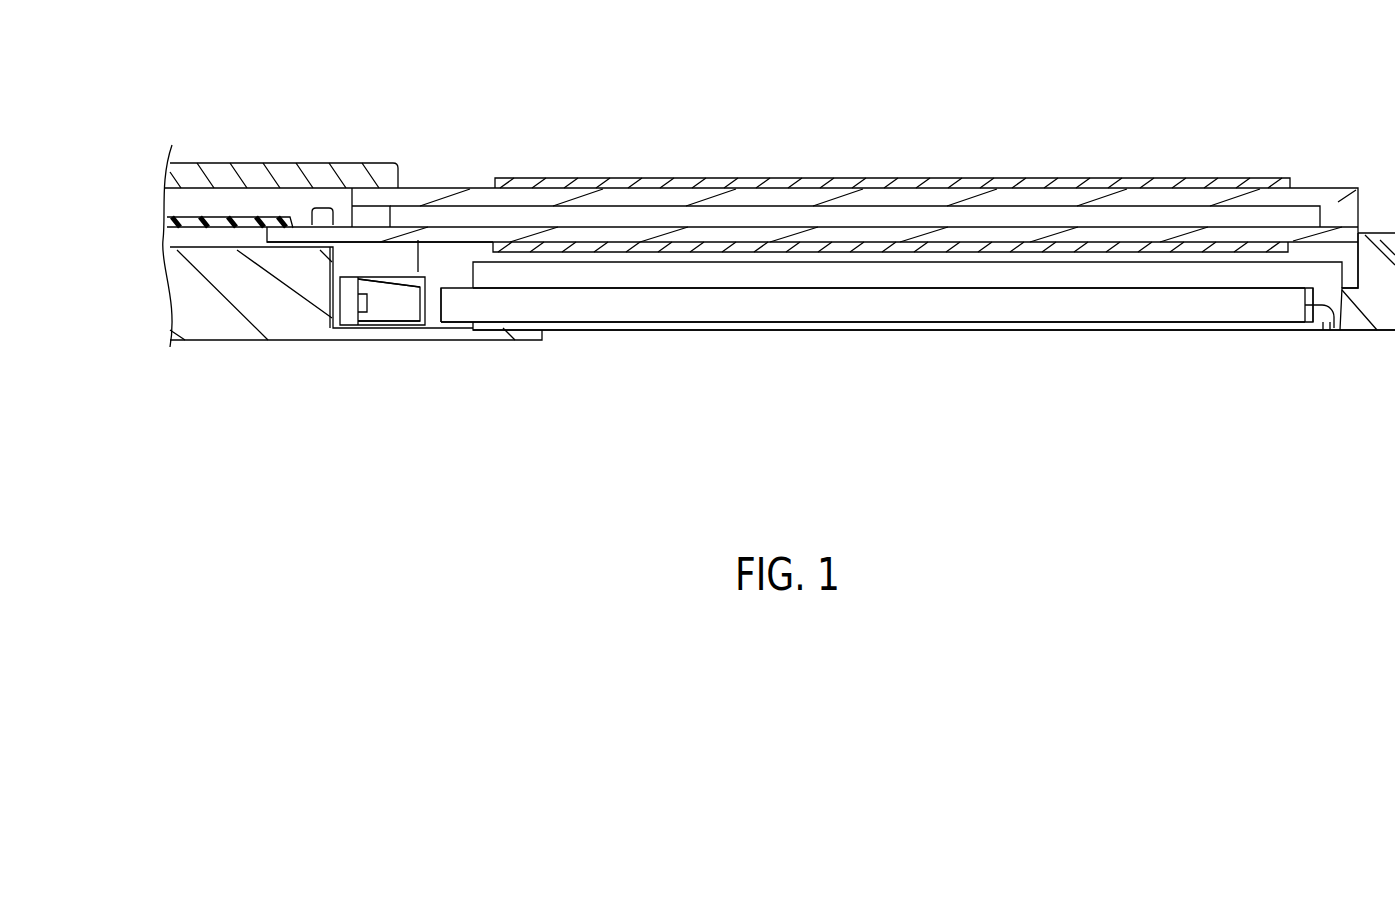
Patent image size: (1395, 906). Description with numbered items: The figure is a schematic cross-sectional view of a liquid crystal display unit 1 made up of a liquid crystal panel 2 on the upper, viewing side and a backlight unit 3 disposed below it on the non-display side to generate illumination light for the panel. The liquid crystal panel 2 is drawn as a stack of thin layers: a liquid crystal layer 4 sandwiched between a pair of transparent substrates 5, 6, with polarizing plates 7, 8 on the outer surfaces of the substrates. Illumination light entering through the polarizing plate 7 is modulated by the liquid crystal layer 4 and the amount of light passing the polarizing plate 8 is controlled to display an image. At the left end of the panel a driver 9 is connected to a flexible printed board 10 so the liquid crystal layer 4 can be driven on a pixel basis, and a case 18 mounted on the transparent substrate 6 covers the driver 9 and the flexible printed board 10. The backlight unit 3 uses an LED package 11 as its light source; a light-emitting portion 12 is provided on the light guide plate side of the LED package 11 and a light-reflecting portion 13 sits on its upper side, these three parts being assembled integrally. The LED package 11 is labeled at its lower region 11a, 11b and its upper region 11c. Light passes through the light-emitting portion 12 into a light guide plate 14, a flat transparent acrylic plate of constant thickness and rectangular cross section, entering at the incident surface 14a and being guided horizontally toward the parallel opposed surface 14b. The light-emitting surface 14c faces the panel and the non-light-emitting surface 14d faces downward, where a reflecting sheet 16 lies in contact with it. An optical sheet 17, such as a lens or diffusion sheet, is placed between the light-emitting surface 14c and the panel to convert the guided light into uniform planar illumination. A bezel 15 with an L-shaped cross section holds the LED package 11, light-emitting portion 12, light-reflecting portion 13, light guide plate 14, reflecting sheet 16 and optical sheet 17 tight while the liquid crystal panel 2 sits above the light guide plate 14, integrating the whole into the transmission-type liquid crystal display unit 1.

The liquid crystal display unit 1 is at (1136, 99).
The liquid crystal panel 2 is at (1146, 177).
The backlight unit 3 is at (1139, 332).
The liquid crystal layer 4 is at (785, 218).
The transparent substrate 5 is at (860, 237).
The transparent substrate 6 is at (930, 198).
The polarizing plate 7 is at (1000, 247).
The polarizing plate 8 is at (1062, 185).
The driver 9 is at (323, 218).
The flexible printed board 10 is at (203, 217).
The LED package 11 is at (377, 327).
The light source bottom 11a is at (352, 327).
The light emitting element 11b is at (370, 327).
The light source top surface 11c is at (394, 305).
The light-emitting portion 12 is at (426, 328).
The light-reflecting portion 13 is at (418, 245).
The light guide plate 14 is at (936, 303).
The incident surface 14a is at (437, 285).
The opposed surface 14b is at (1333, 329).
The light-emitting surface 14c is at (843, 290).
The non-light-emitting surface 14d is at (742, 322).
The bezel 15 is at (288, 318).
The reflecting sheet 16 is at (1007, 330).
The optical sheet 17 is at (1078, 272).
The case 18 is at (268, 172).